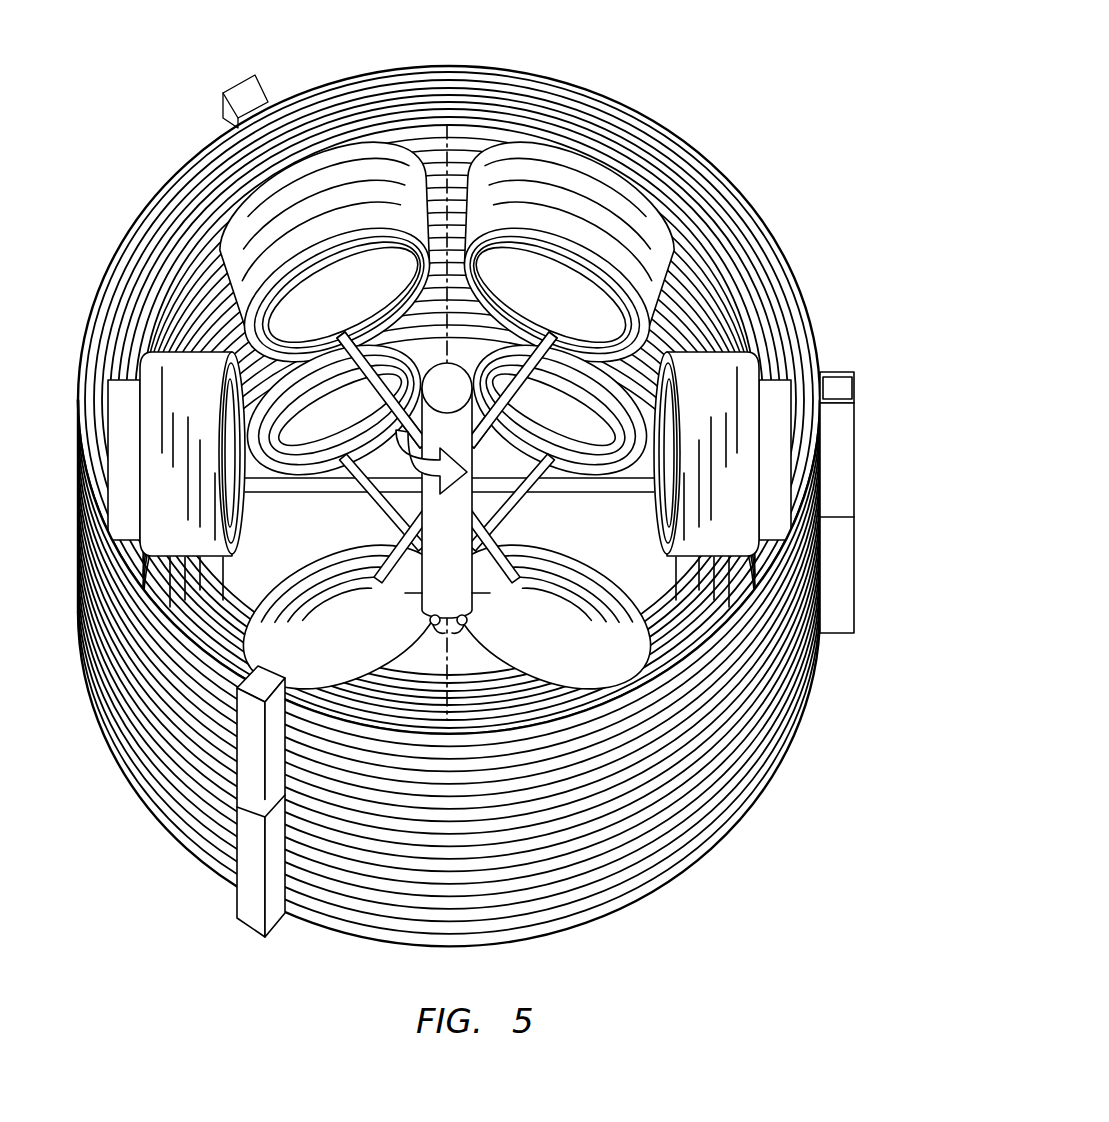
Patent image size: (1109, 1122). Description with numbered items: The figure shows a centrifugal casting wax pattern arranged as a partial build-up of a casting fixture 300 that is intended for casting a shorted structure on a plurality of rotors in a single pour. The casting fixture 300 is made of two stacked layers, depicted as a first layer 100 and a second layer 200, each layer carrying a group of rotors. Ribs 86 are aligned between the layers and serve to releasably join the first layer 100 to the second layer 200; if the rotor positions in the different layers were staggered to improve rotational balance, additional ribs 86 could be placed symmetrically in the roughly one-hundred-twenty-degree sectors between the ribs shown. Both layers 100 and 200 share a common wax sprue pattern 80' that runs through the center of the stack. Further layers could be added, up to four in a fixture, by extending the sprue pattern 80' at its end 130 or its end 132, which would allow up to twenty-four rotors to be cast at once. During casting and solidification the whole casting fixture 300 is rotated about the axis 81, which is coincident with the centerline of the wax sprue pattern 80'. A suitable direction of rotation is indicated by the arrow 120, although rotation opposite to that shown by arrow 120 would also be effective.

The casting fixture 300 is at (487, 478).
The second layer 200 is at (672, 126).
The first layer 100 is at (468, 379).
The axis 81 is at (447, 195).
The end 130 is at (368, 322).
The wax sprue pattern 80' is at (558, 290).
The arrow 120 is at (360, 468).
The end 132 is at (453, 628).
The ribs 86 is at (857, 557).